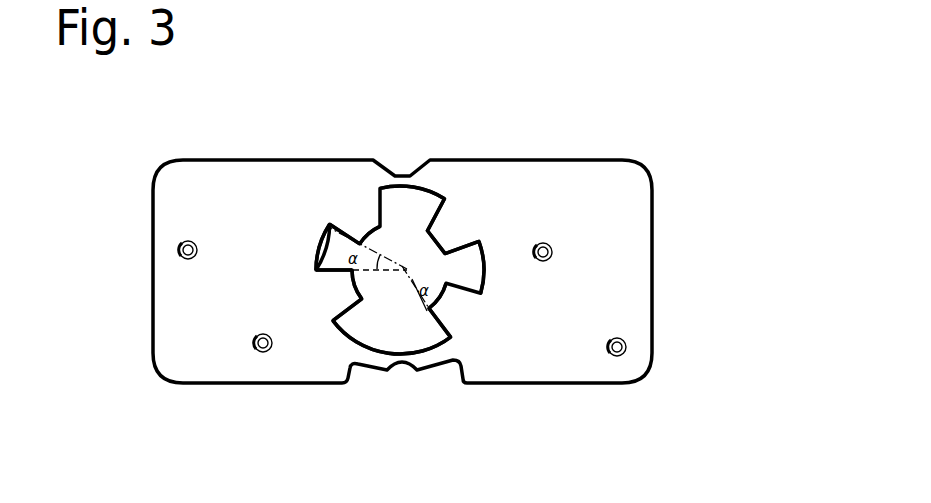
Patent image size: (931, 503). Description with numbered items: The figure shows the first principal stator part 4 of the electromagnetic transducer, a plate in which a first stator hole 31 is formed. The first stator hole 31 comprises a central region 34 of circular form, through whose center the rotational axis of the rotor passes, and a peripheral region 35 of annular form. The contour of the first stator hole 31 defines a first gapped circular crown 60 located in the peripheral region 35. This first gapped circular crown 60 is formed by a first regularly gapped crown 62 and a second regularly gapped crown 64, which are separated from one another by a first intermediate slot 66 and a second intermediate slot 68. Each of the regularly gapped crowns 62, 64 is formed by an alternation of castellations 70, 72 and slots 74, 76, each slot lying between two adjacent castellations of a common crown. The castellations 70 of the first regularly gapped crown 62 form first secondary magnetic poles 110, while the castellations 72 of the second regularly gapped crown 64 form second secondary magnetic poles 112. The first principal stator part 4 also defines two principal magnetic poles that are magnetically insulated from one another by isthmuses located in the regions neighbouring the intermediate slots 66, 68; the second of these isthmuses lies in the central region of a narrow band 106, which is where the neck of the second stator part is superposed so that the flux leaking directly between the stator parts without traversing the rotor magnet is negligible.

The first principal stator part 4 is at (620, 190).
The first intermediate slot 66 is at (397, 200).
The slot 74 is at (338, 247).
The castellation 70 is at (360, 225).
The central region 34 is at (385, 241).
The peripheral region 35 is at (422, 207).
The first gapped circular crown 60 is at (469, 202).
The castellation 72 is at (450, 235).
The slot 76 is at (467, 270).
The first stator hole 31 is at (316, 258).
The first regularly gapped crown 62 is at (316, 284).
The first secondary magnetic pole 110 is at (338, 292).
The second intermediate slot 68 is at (370, 328).
The narrow band 106 is at (430, 355).
The second secondary magnetic pole 112 is at (456, 316).
The second regularly gapped crown 64 is at (489, 307).